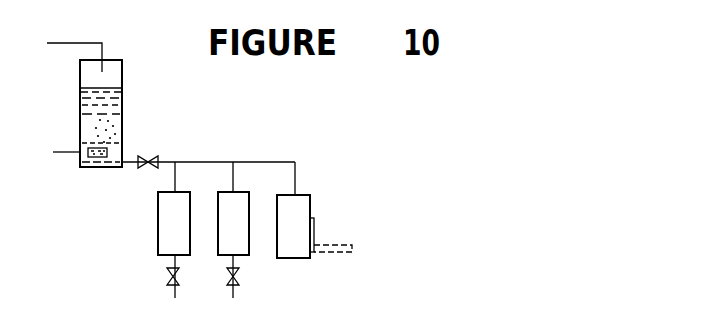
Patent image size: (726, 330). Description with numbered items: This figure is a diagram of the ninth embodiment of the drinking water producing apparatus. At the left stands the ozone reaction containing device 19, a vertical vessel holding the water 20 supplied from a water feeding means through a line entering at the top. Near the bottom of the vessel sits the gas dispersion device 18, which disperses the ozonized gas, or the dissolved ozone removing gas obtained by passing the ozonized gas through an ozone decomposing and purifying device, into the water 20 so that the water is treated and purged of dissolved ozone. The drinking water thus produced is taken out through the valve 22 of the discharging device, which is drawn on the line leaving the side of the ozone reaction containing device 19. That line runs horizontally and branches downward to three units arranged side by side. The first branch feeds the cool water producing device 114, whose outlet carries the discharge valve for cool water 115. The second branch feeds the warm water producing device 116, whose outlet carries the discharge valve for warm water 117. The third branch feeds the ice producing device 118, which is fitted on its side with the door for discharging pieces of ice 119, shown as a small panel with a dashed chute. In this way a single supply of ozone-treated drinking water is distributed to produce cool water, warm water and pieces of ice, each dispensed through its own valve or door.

The gas dispersion device 18 is at (97, 158).
The ozone reaction containing device 19 is at (122, 130).
The water 20 is at (112, 108).
The valve 22 is at (155, 158).
The cool water producing device 114 is at (167, 217).
The discharge valve for cool water 115 is at (170, 272).
The warm water producing device 116 is at (226, 233).
The discharge valve for warm water 117 is at (238, 274).
The ice producing device 118 is at (298, 212).
The door for discharging pieces of ice 119 is at (312, 235).